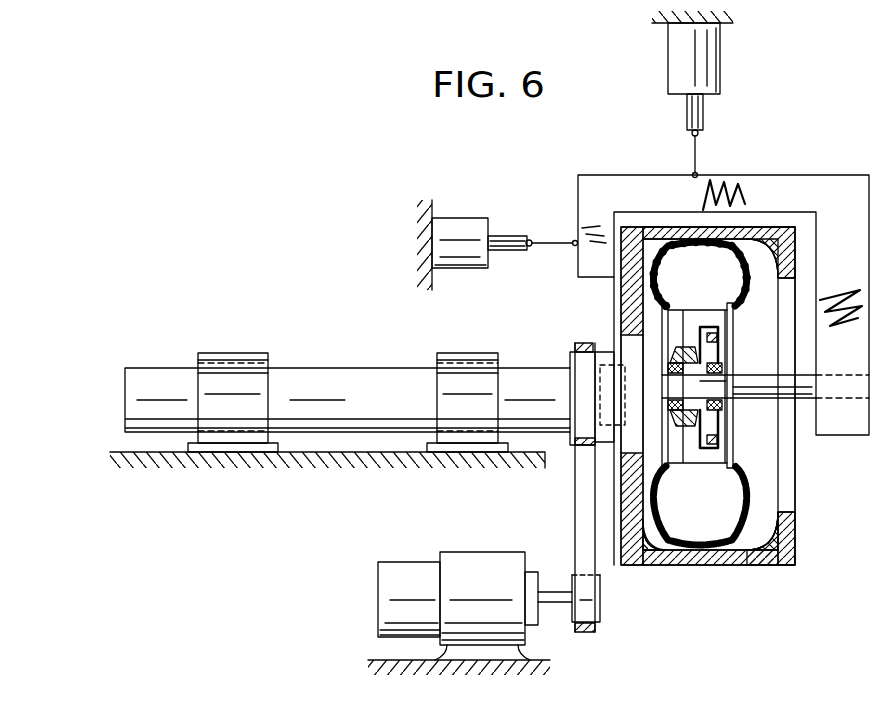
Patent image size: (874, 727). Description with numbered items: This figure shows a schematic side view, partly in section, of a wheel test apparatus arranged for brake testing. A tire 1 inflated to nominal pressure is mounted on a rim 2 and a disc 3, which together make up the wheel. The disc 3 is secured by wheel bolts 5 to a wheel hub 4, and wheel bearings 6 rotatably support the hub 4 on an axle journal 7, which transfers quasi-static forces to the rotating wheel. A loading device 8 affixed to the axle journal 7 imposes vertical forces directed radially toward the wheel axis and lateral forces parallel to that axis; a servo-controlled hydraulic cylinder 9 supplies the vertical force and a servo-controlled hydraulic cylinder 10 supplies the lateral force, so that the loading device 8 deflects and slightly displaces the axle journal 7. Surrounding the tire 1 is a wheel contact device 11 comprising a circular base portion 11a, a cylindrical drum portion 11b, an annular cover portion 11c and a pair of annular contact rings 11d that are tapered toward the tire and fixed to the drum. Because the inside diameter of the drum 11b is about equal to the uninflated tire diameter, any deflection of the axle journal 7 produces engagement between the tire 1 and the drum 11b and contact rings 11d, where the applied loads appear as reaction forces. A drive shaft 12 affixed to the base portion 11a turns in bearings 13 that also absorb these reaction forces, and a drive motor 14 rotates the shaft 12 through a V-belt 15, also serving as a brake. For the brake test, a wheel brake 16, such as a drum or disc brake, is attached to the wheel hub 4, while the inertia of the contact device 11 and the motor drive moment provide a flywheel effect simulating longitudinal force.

The tire 1 is at (735, 542).
The rim 2 is at (735, 464).
The disc 3 is at (682, 328).
The wheel hub 4 is at (699, 416).
The wheel bolts 5 is at (660, 360).
The wheel bearings 6 is at (684, 372).
The axle journal 7 is at (800, 402).
The loading device 8 is at (771, 186).
The servo-controlled hydraulic cylinder 9 is at (705, 66).
The servo-controlled hydraulic cylinder 10 is at (455, 228).
The wheel contact device 11 is at (657, 232).
The circular base portion 11a is at (634, 556).
The cylindrical drum portion 11b is at (697, 566).
The annular cover portion 11c is at (792, 536).
The annular contact rings 11d is at (666, 546).
The drive shaft 12 is at (375, 378).
The bearings 13 is at (238, 378).
The drive motor 14 is at (385, 577).
The V-belt 15 is at (586, 512).
The wheel brake 16 is at (710, 340).